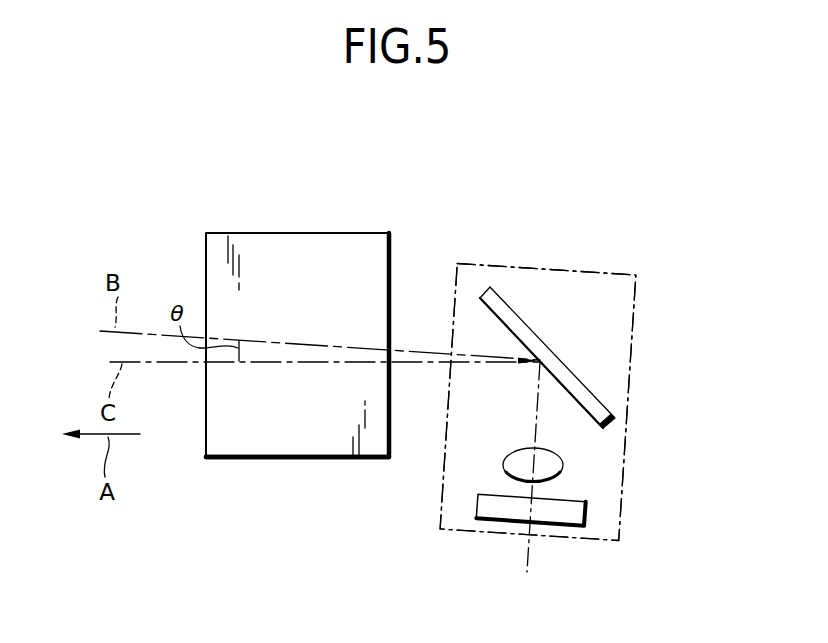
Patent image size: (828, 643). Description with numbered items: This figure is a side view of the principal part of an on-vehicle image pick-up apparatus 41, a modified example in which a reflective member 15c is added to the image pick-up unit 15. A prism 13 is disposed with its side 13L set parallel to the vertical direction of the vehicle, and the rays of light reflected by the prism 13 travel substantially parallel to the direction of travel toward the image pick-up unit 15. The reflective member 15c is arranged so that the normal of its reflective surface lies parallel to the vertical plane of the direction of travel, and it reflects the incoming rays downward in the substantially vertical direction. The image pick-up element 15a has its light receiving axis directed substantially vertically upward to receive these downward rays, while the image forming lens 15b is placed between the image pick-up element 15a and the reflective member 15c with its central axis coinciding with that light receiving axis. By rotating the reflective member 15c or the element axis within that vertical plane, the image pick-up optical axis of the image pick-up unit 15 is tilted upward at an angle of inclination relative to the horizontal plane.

The prism 13 is at (299, 227).
The side of the prism 13L is at (297, 459).
The on-vehicle image pick-up apparatus 41 is at (469, 214).
The image pick-up unit 15 is at (593, 262).
The image pick-up element 15a is at (586, 513).
The image forming lens 15b is at (563, 467).
The reflective member 15c is at (583, 384).